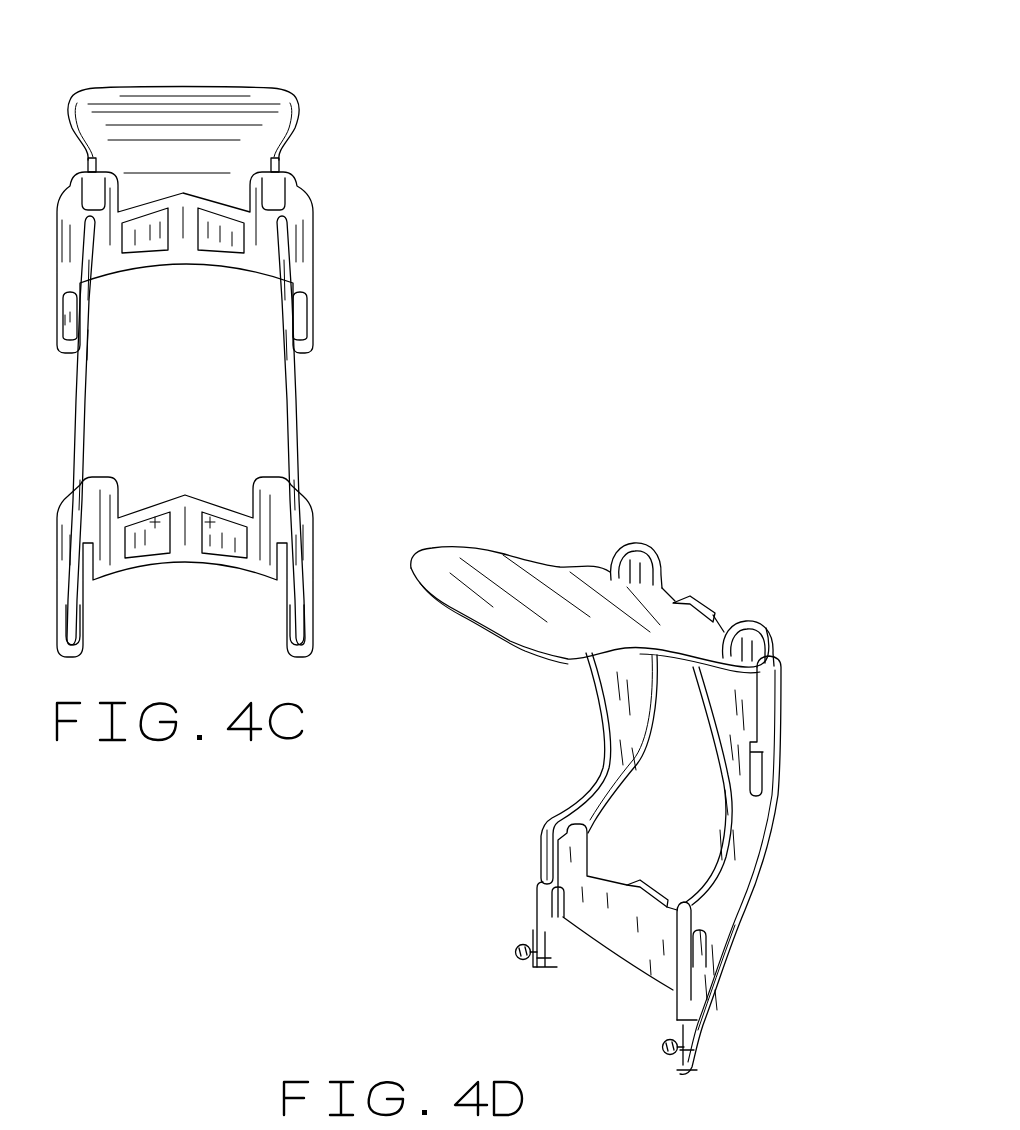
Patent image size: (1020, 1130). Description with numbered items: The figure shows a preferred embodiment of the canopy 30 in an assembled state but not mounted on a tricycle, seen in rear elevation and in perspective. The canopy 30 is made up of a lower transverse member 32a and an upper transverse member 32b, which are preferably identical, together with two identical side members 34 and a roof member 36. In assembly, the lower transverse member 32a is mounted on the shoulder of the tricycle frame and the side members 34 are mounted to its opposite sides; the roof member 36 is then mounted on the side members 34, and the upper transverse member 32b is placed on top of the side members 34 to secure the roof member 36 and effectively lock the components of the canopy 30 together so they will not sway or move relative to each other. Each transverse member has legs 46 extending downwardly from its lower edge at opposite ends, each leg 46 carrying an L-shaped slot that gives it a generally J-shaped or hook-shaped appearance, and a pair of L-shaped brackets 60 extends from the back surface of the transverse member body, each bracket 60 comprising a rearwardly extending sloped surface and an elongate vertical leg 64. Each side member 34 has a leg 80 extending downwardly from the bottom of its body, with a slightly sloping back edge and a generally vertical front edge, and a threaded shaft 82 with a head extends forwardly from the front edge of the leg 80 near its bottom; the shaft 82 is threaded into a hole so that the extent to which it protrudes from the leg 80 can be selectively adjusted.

In FIG. 4C, the canopy 30 is at (238, 76).
In FIG. 4D, the canopy 30 is at (688, 550).
In FIG. 4C, the roof member 36 is at (290, 100).
In FIG. 4D, the roof member 36 is at (548, 560).
In FIG. 4C, the upper transverse member 32b is at (313, 258).
In FIG. 4D, the upper transverse member 32b is at (780, 660).
In FIG. 4C, the lower transverse member 32a is at (315, 540).
In FIG. 4D, the lower transverse member 32a is at (628, 953).
In FIG. 4C, the side members 34 is at (85, 418).
In FIG. 4D, the side members 34 is at (632, 772).
In FIG. 4C, the elongate vertical leg 64 is at (157, 525).
In FIG. 4C, the L-shaped brackets 60 is at (138, 540).
In FIG. 4D, the leg 80 is at (718, 1000).
In FIG. 4D, the threaded shaft 82 is at (516, 948).
In FIG. 4D, the legs 46 is at (547, 973).